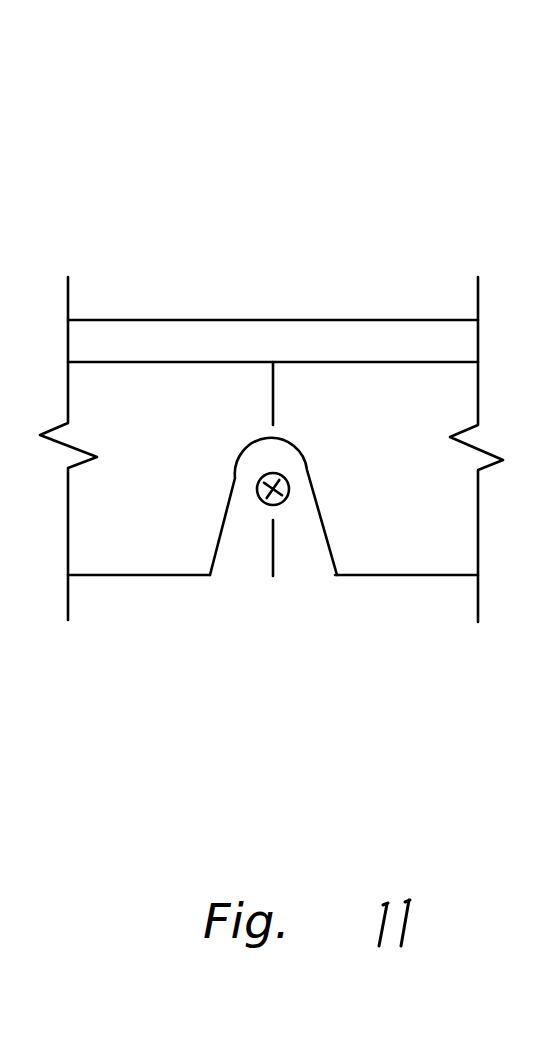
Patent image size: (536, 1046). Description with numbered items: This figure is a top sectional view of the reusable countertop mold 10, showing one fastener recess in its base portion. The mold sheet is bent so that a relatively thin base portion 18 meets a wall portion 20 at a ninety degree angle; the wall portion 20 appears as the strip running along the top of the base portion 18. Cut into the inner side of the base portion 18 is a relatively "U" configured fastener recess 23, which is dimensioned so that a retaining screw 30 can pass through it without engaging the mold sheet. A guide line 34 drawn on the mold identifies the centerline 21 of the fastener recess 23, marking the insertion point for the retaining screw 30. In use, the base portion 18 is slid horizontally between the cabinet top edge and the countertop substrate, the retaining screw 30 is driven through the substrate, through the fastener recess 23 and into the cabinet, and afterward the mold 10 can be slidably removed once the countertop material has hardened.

The reusable countertop mold 10 is at (423, 203).
The base portion 18 is at (154, 410).
The wall portion 20 is at (213, 340).
The centerline 21 is at (273, 553).
The fastener recess 23 is at (235, 555).
The retaining screw 30 is at (282, 483).
The guide line 34 is at (274, 394).